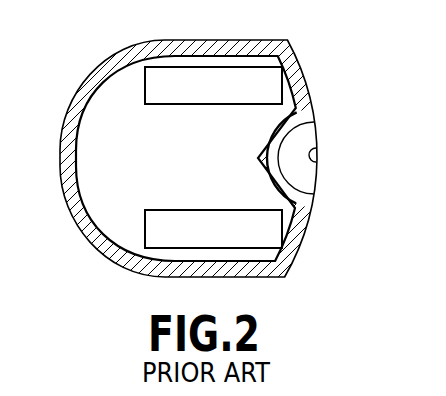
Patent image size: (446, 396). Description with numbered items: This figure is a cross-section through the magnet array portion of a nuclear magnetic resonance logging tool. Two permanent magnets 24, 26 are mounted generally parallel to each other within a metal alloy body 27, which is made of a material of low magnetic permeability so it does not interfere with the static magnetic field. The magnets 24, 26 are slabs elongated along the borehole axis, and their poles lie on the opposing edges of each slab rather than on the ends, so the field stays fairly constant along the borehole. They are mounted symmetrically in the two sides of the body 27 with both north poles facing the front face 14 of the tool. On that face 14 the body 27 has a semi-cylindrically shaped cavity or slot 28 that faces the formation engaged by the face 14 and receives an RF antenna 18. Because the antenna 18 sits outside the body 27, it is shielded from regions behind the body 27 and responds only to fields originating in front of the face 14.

The face 14 is at (299, 63).
The RF antenna 18 is at (305, 127).
The permanent magnet 24 is at (145, 87).
The permanent magnet 26 is at (145, 225).
The metal alloy body 27 is at (208, 39).
The cavity 28 is at (306, 209).